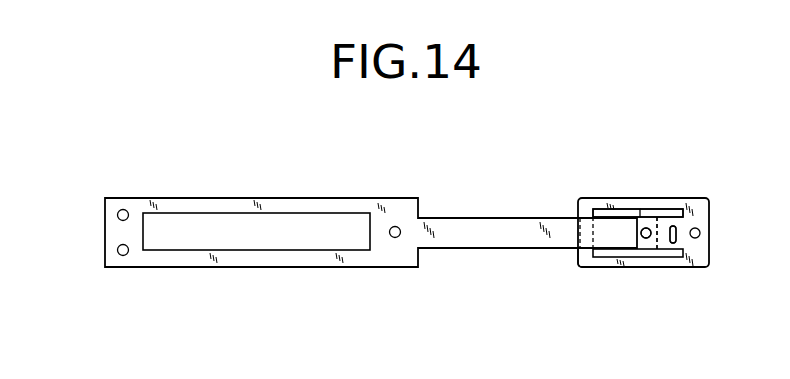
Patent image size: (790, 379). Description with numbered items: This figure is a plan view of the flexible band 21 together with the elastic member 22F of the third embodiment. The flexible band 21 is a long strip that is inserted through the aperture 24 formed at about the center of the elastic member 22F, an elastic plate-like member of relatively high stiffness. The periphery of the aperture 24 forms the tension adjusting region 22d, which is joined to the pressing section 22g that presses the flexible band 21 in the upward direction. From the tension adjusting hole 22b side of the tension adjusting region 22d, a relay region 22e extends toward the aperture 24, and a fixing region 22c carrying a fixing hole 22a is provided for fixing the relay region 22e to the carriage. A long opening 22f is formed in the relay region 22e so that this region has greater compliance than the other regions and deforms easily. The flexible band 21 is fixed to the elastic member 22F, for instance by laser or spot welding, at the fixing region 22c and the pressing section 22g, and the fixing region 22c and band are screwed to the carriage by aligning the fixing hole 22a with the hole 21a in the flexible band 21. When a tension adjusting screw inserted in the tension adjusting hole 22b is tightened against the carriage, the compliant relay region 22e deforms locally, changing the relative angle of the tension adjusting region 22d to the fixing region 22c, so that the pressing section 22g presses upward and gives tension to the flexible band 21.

The flexible band 21 is at (472, 232).
The hole 21a is at (646, 238).
The fixing hole 22a is at (631, 286).
The tension adjusting hole 22b is at (700, 237).
The fixing region 22c is at (648, 228).
The tension adjusting region 22d is at (667, 210).
The relay region 22e is at (676, 248).
The long opening 22f is at (678, 229).
The pressing section 22g is at (585, 260).
The elastic member 22F is at (655, 193).
The aperture 24 is at (602, 212).